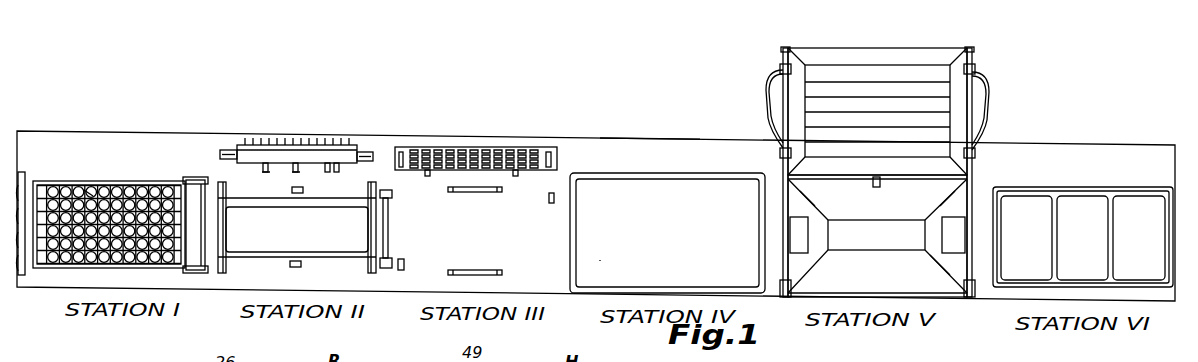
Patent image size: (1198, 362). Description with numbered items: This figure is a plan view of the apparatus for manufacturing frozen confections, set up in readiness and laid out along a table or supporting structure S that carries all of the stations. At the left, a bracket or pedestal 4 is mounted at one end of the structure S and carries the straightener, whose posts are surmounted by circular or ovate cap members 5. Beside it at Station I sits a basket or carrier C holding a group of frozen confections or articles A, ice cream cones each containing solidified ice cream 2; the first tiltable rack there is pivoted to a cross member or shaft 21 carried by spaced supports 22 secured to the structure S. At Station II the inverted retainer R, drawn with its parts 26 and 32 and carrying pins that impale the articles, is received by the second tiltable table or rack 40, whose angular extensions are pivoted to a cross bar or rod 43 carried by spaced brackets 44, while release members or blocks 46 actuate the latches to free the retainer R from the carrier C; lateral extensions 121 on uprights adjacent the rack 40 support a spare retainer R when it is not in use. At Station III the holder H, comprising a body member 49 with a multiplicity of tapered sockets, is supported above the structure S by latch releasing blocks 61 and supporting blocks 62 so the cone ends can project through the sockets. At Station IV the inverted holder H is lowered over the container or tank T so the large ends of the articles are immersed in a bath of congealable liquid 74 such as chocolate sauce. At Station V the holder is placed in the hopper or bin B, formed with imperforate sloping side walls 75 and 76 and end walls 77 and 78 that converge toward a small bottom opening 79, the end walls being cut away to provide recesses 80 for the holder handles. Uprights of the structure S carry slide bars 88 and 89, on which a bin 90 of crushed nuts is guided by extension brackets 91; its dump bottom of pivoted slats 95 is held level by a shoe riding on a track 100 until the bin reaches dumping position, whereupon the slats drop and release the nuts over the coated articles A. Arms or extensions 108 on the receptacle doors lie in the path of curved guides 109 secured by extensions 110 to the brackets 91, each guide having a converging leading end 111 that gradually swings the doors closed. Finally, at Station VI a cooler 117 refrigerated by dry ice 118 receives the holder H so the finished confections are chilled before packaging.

The ice cream 2 is at (105, 255).
The bracket or pedestal 4 is at (22, 278).
The cap member 5 is at (21, 176).
The cross member or shaft 21 is at (205, 226).
The spaced supports 22 is at (190, 178).
The roller support 26 is at (296, 170).
The roller shaft 32 is at (222, 153).
The second tiltable table or rack 40 is at (325, 258).
The cross bar or rod 43 is at (388, 238).
The spaced brackets 44 is at (389, 193).
The release members or blocks 46 is at (306, 190).
The body member 49 is at (470, 147).
The latch releasing blocks 61 is at (405, 267).
The supporting blocks 62 is at (471, 192).
The bath or mixture of congealable liquid 74 is at (628, 268).
The side wall 75 is at (879, 187).
The side wall 76 is at (892, 286).
The end wall 77 is at (808, 188).
The end wall 78 is at (950, 188).
The opening 79 is at (871, 222).
The recesses 80 is at (808, 233).
The slide bar 88 is at (785, 168).
The slide bar 89 is at (970, 170).
The bin 90 is at (870, 48).
The extension brackets 91 is at (785, 70).
The panels or slats 95 is at (828, 64).
The track 100 is at (881, 188).
The arms or extensions 108 is at (776, 233).
The curved track or guide 109 is at (768, 93).
The extension 110 is at (772, 72).
The converging leading end 111 is at (775, 131).
The cooler 117 is at (1071, 188).
The dry ice or solidified carbon dioxide 118 is at (1078, 249).
The lateral extensions 121 is at (266, 171).
The frozen confections or articles A is at (115, 190).
The hopper or bin B is at (845, 273).
The baskets or carriers C is at (93, 190).
The holder H is at (527, 146).
The retainer R is at (359, 145).
The table or supporting structure S is at (646, 138).
The container or tank T is at (667, 233).